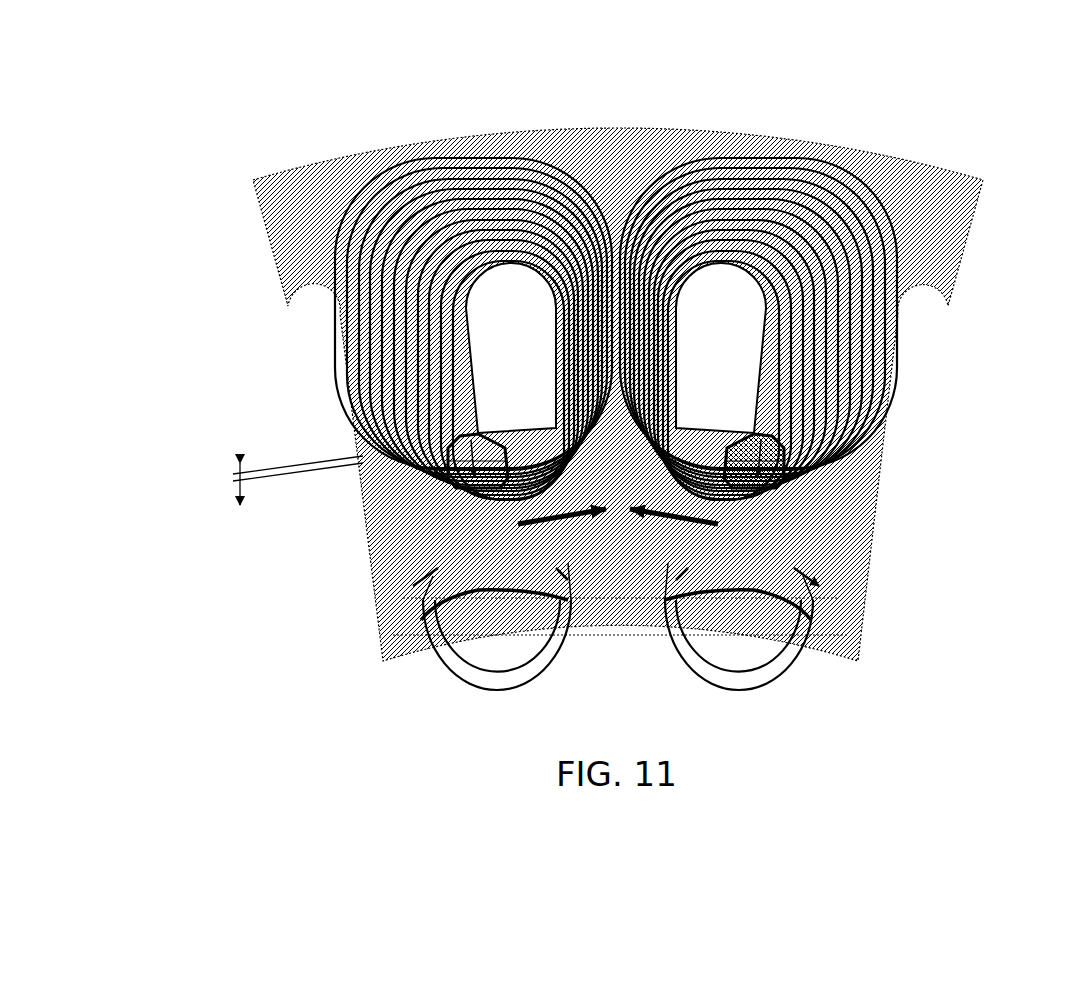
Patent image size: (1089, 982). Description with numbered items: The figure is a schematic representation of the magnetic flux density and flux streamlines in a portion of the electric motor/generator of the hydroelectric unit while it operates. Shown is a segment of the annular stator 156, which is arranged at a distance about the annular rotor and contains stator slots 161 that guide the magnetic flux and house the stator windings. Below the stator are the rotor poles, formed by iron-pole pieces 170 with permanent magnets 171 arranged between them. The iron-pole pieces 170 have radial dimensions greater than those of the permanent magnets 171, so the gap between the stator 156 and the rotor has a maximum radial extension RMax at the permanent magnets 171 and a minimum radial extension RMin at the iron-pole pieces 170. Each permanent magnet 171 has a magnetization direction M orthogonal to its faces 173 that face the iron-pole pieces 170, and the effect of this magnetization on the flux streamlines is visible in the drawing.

The annular stator 156 is at (935, 128).
The stator slot 161 is at (498, 300).
The iron-pole piece 170 is at (410, 578).
The permanent magnet 171 is at (720, 516).
The face 173 is at (477, 563).